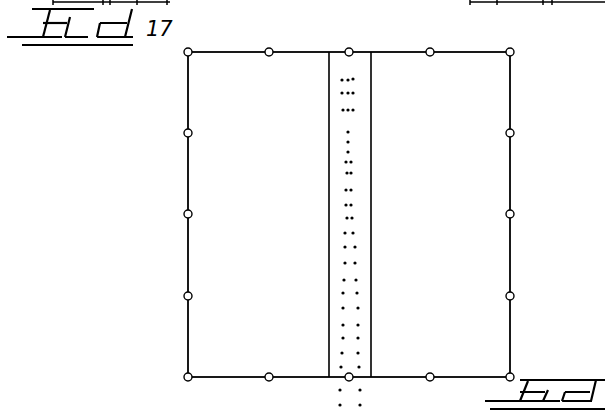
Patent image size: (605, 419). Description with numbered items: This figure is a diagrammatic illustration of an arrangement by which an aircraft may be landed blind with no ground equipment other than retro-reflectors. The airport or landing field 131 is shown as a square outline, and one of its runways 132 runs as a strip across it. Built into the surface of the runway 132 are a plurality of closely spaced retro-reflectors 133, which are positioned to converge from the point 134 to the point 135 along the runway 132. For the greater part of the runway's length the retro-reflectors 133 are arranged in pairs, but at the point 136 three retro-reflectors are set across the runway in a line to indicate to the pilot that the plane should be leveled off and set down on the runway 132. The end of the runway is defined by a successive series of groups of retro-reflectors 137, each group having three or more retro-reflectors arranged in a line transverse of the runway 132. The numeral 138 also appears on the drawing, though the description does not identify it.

The landing field 131 is at (508, 96).
The runway 132 is at (368, 138).
The retro-reflectors 133 is at (357, 324).
The point 134 is at (349, 378).
The point 135 is at (348, 121).
The point 136 is at (347, 218).
The groups of retro-reflectors 137 is at (342, 110).
The fasteners 138 is at (512, 51).